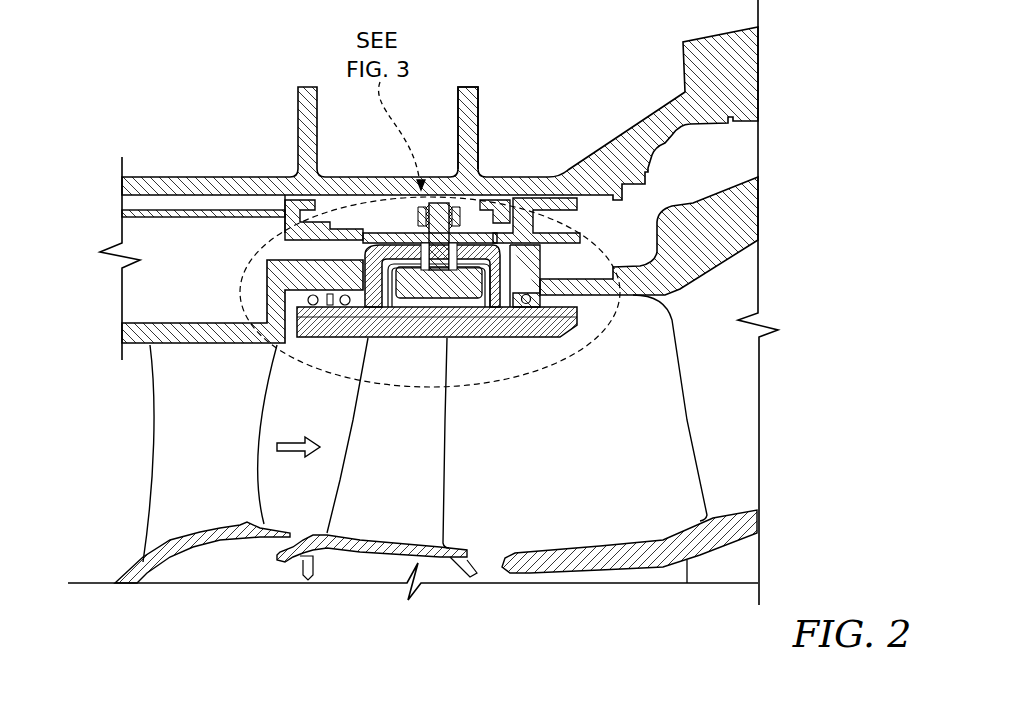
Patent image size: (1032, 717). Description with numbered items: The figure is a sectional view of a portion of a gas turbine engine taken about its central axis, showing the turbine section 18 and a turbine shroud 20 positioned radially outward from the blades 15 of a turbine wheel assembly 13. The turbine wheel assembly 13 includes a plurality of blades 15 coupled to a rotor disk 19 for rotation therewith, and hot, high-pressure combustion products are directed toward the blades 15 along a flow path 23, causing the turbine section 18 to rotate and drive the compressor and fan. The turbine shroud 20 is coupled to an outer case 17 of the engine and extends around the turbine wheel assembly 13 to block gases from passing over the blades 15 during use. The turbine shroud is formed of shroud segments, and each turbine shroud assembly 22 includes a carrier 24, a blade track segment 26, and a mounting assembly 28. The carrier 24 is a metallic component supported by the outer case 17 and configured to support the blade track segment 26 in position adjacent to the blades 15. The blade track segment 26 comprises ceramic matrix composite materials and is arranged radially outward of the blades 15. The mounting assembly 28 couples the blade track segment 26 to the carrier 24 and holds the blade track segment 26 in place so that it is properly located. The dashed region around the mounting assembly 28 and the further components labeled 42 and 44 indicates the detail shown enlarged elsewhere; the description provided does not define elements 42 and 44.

The turbine wheel assembly 13 is at (297, 492).
The blades 15 is at (443, 468).
The outer case 17 is at (289, 168).
The turbine section 18 is at (146, 126).
The rotor disk 19 is at (308, 563).
The turbine shroud 20 is at (492, 158).
The turbine shroud assembly 22 is at (530, 218).
The flow path 23 is at (287, 424).
The carrier 24 is at (316, 250).
The blade track segment 26 is at (507, 340).
The mounting assembly 28 is at (463, 211).
The bolt 42 is at (438, 189).
The seal 44 is at (422, 309).